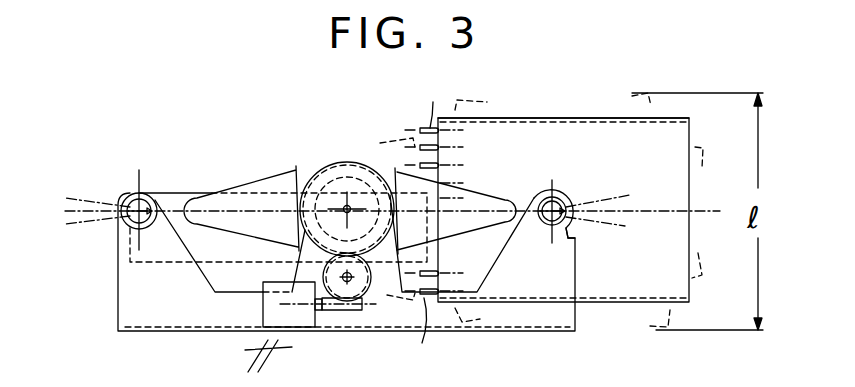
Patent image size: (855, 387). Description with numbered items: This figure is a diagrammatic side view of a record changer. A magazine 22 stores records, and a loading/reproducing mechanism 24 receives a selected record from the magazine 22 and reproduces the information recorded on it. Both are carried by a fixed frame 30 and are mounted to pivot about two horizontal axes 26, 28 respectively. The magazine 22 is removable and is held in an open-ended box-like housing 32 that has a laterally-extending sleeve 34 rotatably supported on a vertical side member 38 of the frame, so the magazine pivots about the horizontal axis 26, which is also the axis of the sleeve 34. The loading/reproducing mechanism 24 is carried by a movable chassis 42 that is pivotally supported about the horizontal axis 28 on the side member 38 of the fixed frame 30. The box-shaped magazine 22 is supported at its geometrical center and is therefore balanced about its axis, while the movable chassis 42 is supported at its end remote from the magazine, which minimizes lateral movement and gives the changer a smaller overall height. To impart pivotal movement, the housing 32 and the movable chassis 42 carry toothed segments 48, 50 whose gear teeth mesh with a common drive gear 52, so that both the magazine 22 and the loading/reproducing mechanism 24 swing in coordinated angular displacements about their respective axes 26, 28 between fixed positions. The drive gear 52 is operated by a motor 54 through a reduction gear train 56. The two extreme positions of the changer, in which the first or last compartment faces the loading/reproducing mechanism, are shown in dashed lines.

The magazine 22 is at (529, 150).
The loading/reproducing mechanism 24 is at (185, 186).
The horizontal axis 26 is at (568, 199).
The horizontal axis 28 is at (121, 198).
The fixed frame 30 is at (531, 332).
The housing 32 is at (573, 118).
The sleeve 34 is at (575, 240).
The vertical side member 38 is at (542, 283).
The movable chassis 42 is at (219, 255).
The toothed segment 48 is at (393, 170).
The toothed segment 50 is at (255, 200).
The drive gear 52 is at (346, 161).
The motor 54 is at (298, 316).
The reduction gear train 56 is at (355, 288).